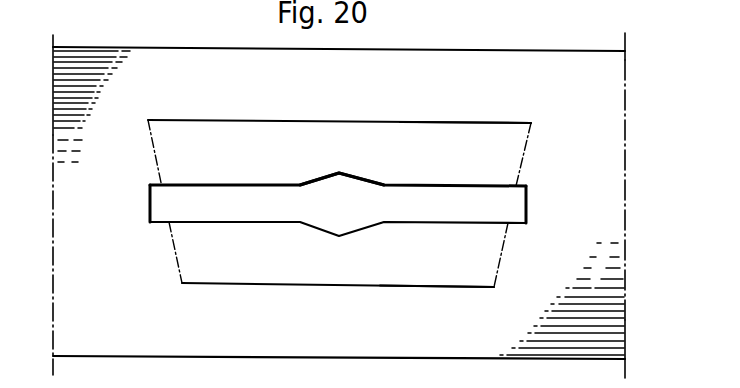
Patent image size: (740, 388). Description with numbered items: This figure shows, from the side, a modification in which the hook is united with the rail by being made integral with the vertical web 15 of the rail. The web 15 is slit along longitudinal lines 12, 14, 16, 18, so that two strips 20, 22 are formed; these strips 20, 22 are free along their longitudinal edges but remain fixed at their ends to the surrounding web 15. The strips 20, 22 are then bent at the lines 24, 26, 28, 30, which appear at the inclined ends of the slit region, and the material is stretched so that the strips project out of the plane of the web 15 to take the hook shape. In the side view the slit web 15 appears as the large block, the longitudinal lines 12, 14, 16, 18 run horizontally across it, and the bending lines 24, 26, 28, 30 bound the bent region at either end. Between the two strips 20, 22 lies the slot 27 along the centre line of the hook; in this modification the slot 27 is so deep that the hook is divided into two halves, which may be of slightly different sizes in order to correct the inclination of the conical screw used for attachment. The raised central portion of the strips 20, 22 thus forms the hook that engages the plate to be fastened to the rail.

The longitudinal line 12 is at (258, 121).
The longitudinal line 14 is at (283, 190).
The vertical web 15 is at (603, 99).
The longitudinal line 16 is at (232, 217).
The longitudinal line 18 is at (285, 285).
The strip 20 is at (467, 132).
The strip 22 is at (438, 270).
The bending line 24 is at (155, 155).
The bending line 26 is at (173, 240).
The slot 27 is at (352, 193).
The bending line 28 is at (528, 158).
The bending line 30 is at (507, 244).